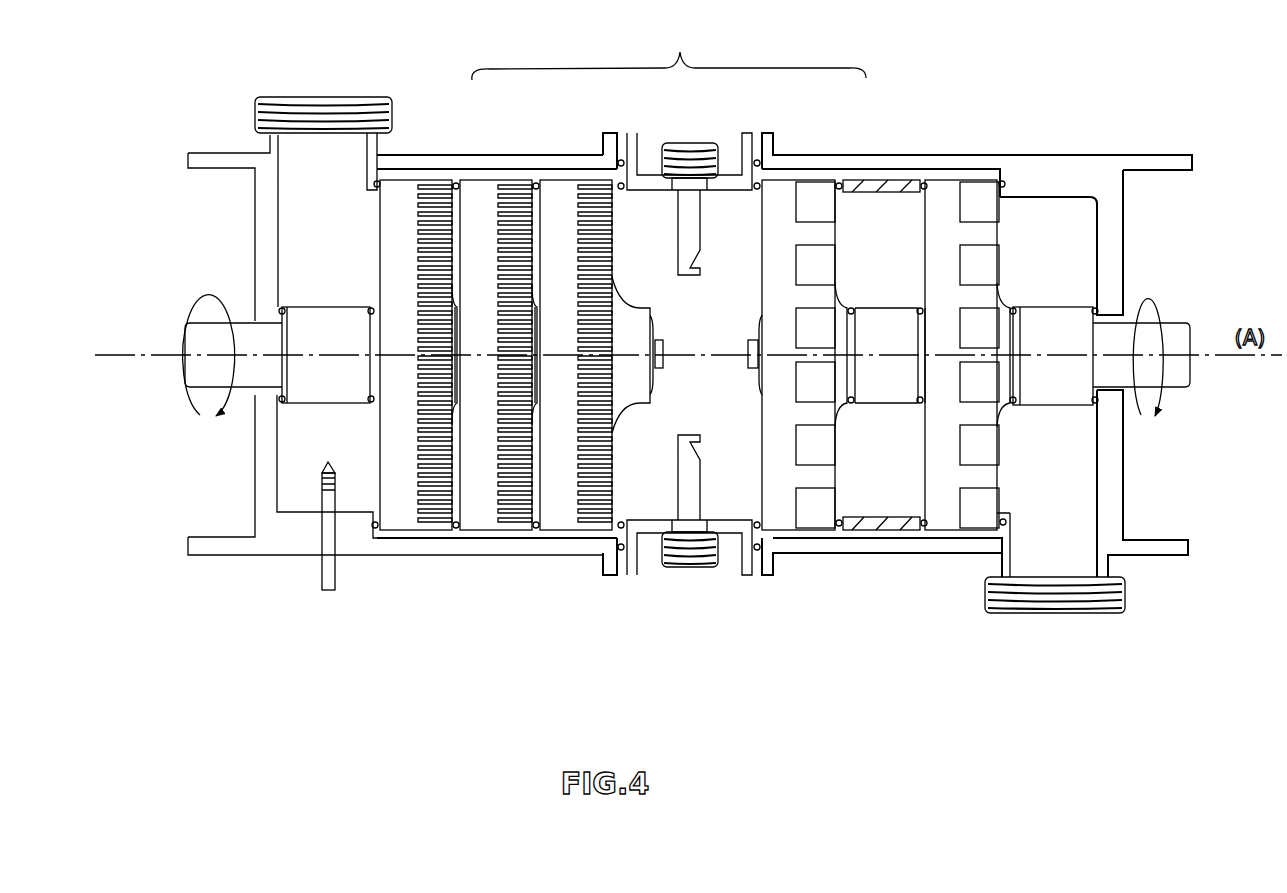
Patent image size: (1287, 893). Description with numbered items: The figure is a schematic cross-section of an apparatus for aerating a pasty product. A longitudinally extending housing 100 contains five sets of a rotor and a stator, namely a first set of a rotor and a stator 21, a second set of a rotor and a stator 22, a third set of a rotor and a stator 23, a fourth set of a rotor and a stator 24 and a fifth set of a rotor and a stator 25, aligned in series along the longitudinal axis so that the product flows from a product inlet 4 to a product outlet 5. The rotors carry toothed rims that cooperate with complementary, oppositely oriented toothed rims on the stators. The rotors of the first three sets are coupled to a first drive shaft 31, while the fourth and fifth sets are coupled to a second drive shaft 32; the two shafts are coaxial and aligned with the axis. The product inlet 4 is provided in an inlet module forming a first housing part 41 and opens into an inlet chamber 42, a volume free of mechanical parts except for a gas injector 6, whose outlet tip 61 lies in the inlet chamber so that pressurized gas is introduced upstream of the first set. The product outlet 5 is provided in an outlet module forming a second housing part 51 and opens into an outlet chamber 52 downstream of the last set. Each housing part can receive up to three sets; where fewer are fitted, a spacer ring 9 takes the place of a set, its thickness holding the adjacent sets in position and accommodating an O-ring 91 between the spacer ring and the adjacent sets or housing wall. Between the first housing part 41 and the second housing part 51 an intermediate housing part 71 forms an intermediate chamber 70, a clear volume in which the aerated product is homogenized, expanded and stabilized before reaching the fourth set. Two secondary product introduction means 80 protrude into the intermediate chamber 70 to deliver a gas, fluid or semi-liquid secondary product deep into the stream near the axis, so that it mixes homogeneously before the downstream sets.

The housing 100 is at (781, 330).
The product inlet 4 is at (320, 96).
The product outlet 5 is at (1050, 614).
The gas injector 6 is at (328, 498).
The outlet tip 61 is at (322, 464).
The spacer ring 9 is at (862, 535).
The first set of a rotor and a stator 21 is at (400, 522).
The second set of a rotor and a stator 22 is at (483, 520).
The third set of a rotor and a stator 23 is at (566, 520).
The fourth set of a rotor and a stator 24 is at (781, 513).
The fifth set of a rotor and a stator 25 is at (950, 513).
The first drive shaft 31 is at (186, 373).
The second drive shaft 32 is at (1171, 378).
The first housing part 41 is at (482, 163).
The inlet chamber 42 is at (300, 228).
The second housing part 51 is at (797, 163).
The outlet chamber 52 is at (1072, 242).
The intermediate chamber 70 is at (642, 500).
The intermediate housing part 71 is at (635, 175).
The secondary product introduction means 80 is at (690, 500).
The O-ring 91 is at (932, 181).